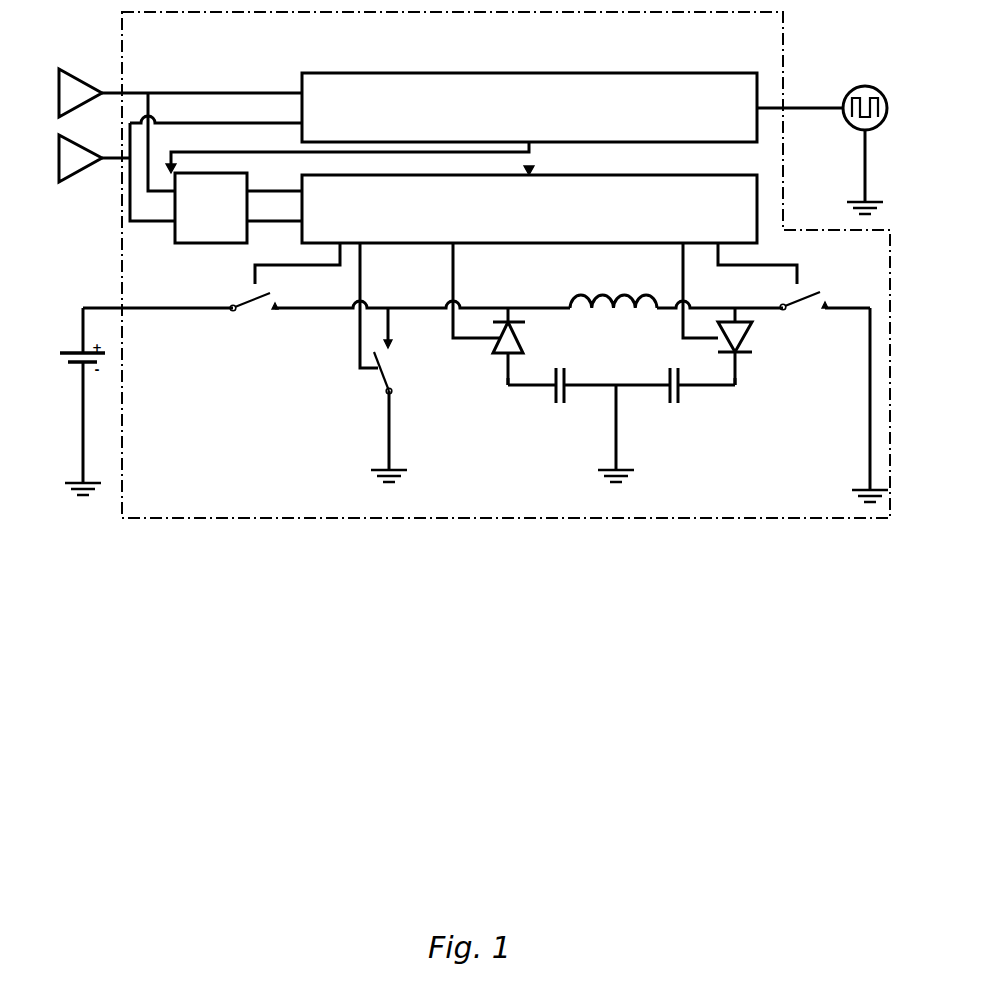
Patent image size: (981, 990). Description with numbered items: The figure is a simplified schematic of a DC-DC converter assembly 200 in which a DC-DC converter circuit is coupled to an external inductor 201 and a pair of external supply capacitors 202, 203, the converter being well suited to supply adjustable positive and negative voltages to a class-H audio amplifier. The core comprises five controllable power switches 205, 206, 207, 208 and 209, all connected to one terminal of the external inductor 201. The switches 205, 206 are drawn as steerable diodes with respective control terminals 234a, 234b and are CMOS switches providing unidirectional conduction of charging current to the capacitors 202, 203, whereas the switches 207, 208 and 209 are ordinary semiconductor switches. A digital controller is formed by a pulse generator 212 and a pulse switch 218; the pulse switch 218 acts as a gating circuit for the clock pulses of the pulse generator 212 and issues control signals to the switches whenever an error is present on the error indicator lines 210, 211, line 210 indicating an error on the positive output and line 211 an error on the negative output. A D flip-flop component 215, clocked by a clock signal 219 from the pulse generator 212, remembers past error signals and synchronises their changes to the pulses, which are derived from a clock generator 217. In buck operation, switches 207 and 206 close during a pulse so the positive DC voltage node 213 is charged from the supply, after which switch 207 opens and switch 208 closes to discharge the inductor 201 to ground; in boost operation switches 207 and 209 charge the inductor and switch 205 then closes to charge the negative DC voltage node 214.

The DC-DC converter assembly 200 is at (483, 289).
The external inductor 201 is at (617, 286).
The first capacitor 202 is at (557, 412).
The second capacitor 203 is at (675, 417).
The controllable power switch 205 is at (556, 346).
The controllable power switch 206 is at (776, 346).
The controllable switch 207 is at (251, 329).
The controllable switch 208 is at (364, 362).
The controllable switch 209 is at (803, 372).
The error indicator line 210 is at (180, 76).
The error indicator line 211 is at (91, 176).
The pulse generator 212 is at (529, 93).
The positive DC voltage node 213 is at (777, 397).
The negative DC voltage node 214 is at (457, 415).
The D flip-flop component 215 is at (217, 227).
The clock generator 217 is at (822, 129).
The pulse switch 218 is at (529, 194).
The clock signal 219 is at (216, 121).
The control terminal 234a is at (450, 305).
The control terminal 234b is at (672, 304).